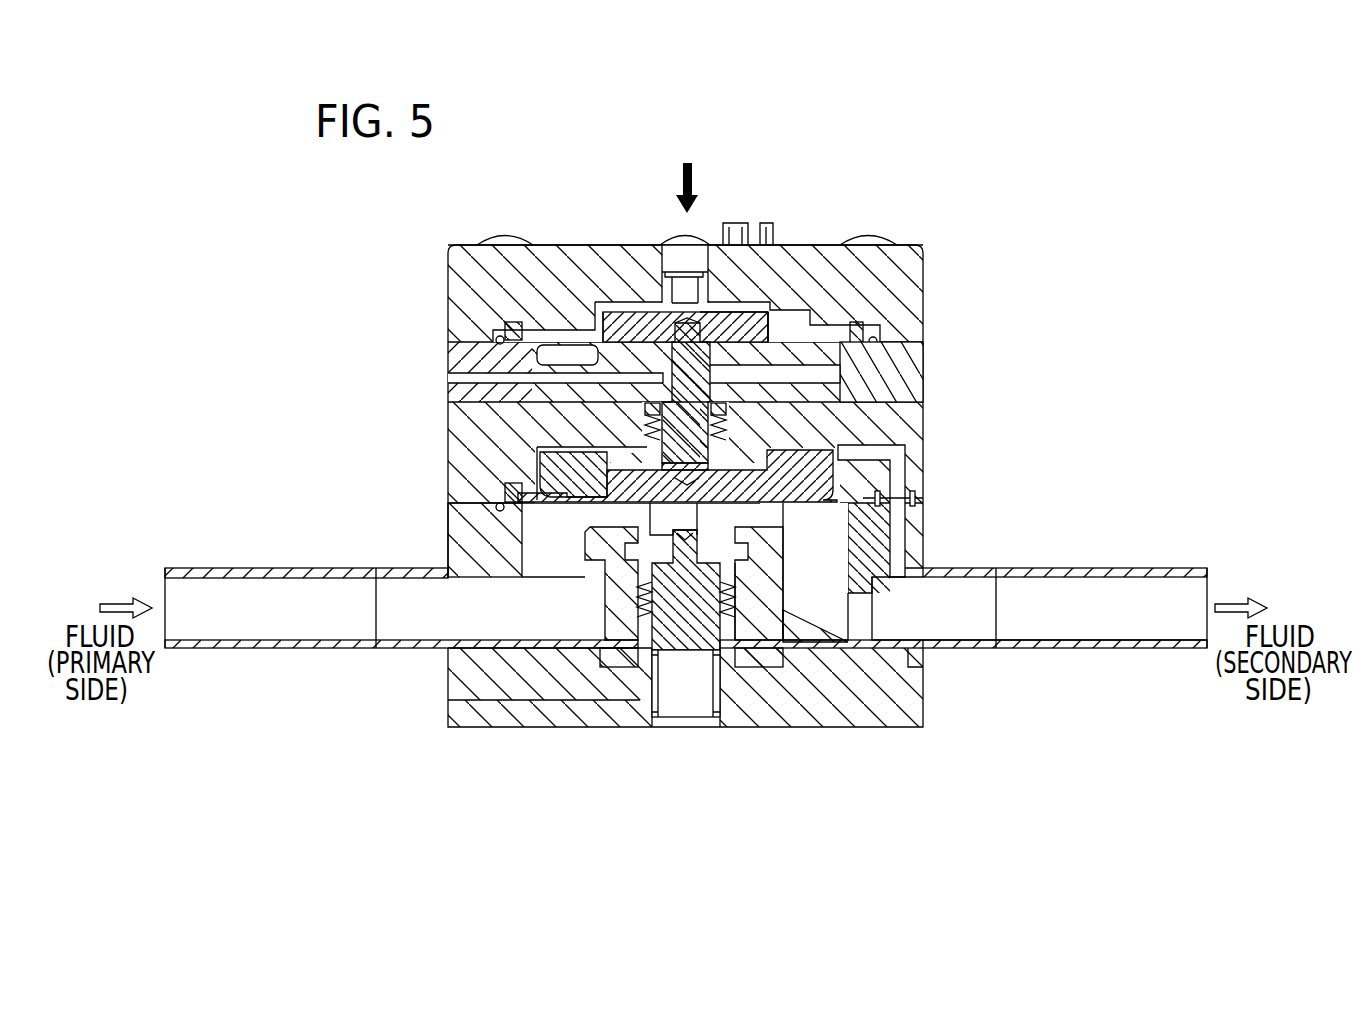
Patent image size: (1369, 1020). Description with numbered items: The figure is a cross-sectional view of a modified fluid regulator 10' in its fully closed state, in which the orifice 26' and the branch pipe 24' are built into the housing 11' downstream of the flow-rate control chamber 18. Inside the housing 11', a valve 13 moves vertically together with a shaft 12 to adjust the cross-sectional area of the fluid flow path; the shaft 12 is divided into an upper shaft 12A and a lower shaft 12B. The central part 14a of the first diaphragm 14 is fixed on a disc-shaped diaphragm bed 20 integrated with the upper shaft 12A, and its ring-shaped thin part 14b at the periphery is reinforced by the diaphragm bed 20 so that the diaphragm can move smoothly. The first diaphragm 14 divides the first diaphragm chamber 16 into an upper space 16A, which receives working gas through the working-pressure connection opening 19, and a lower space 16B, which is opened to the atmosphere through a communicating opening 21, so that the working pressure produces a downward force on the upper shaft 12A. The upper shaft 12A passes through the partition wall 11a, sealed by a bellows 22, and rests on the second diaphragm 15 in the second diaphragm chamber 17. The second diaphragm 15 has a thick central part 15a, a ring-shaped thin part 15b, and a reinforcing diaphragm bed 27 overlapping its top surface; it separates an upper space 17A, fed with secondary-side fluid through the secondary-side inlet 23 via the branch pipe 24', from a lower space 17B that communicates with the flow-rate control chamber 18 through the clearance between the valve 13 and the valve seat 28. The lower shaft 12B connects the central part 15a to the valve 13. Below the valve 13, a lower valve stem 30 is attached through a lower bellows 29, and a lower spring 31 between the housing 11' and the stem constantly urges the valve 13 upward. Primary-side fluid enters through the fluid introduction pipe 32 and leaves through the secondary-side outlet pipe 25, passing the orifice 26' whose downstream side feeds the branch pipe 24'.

The regulator 10' is at (706, 173).
The housing 11' is at (642, 407).
The partition wall 11a is at (640, 410).
The shaft 12 is at (712, 358).
The upper shaft 12A is at (705, 398).
The lower shaft 12B is at (712, 518).
The valve 13 is at (720, 553).
The first diaphragm 14 is at (636, 298).
The central part 14a is at (612, 313).
The thin part 14b is at (837, 343).
The second diaphragm 15 is at (573, 512).
The central part 15a is at (751, 473).
The thin part 15b is at (525, 513).
The first diaphragm chamber 16 is at (758, 292).
The upper space 16A is at (773, 310).
The lower space 16B is at (833, 378).
The second diaphragm chamber 17 is at (862, 541).
The upper space 17A is at (533, 445).
The lower space 17B is at (525, 543).
The flow-rate control chamber 18 is at (757, 617).
The working-pressure connection opening 19 is at (688, 253).
The diaphragm bed 20 is at (828, 360).
The communicating opening 21 is at (452, 379).
The bellows 22 is at (640, 440).
The secondary-side inlet 23 is at (863, 450).
The branch pipe 24' is at (938, 486).
The secondary-side outlet pipe 25 is at (950, 648).
The orifice 26' is at (821, 699).
The diaphragm bed 27 is at (543, 472).
The valve seat 28 is at (730, 547).
The lower bellows 29 is at (637, 602).
The lower valve stem 30 is at (678, 650).
The lower spring 31 is at (713, 707).
The fluid introduction pipe 32 is at (297, 650).